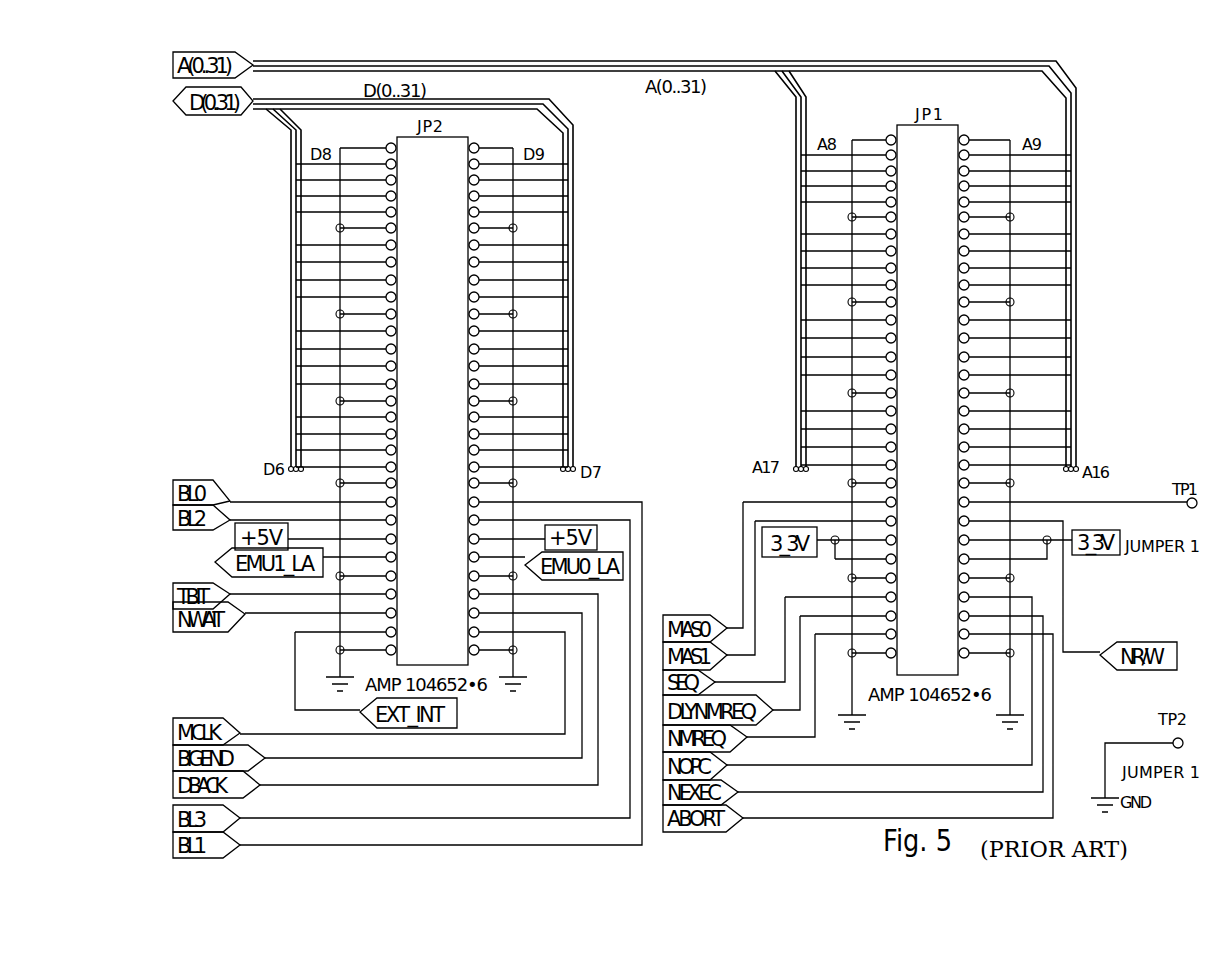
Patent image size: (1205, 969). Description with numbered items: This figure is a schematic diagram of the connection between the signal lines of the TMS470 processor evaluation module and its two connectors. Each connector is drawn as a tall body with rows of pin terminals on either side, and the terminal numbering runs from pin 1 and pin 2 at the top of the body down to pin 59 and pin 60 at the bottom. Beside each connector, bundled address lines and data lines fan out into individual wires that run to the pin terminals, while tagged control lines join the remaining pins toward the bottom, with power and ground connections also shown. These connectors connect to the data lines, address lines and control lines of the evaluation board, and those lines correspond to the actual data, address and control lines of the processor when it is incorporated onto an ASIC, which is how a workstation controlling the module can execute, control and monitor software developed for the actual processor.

The connector pin 1 is at (733, 148).
The connector pin 2 is at (626, 148).
The connector pin 59 is at (726, 655).
The connector pin 60 is at (631, 655).